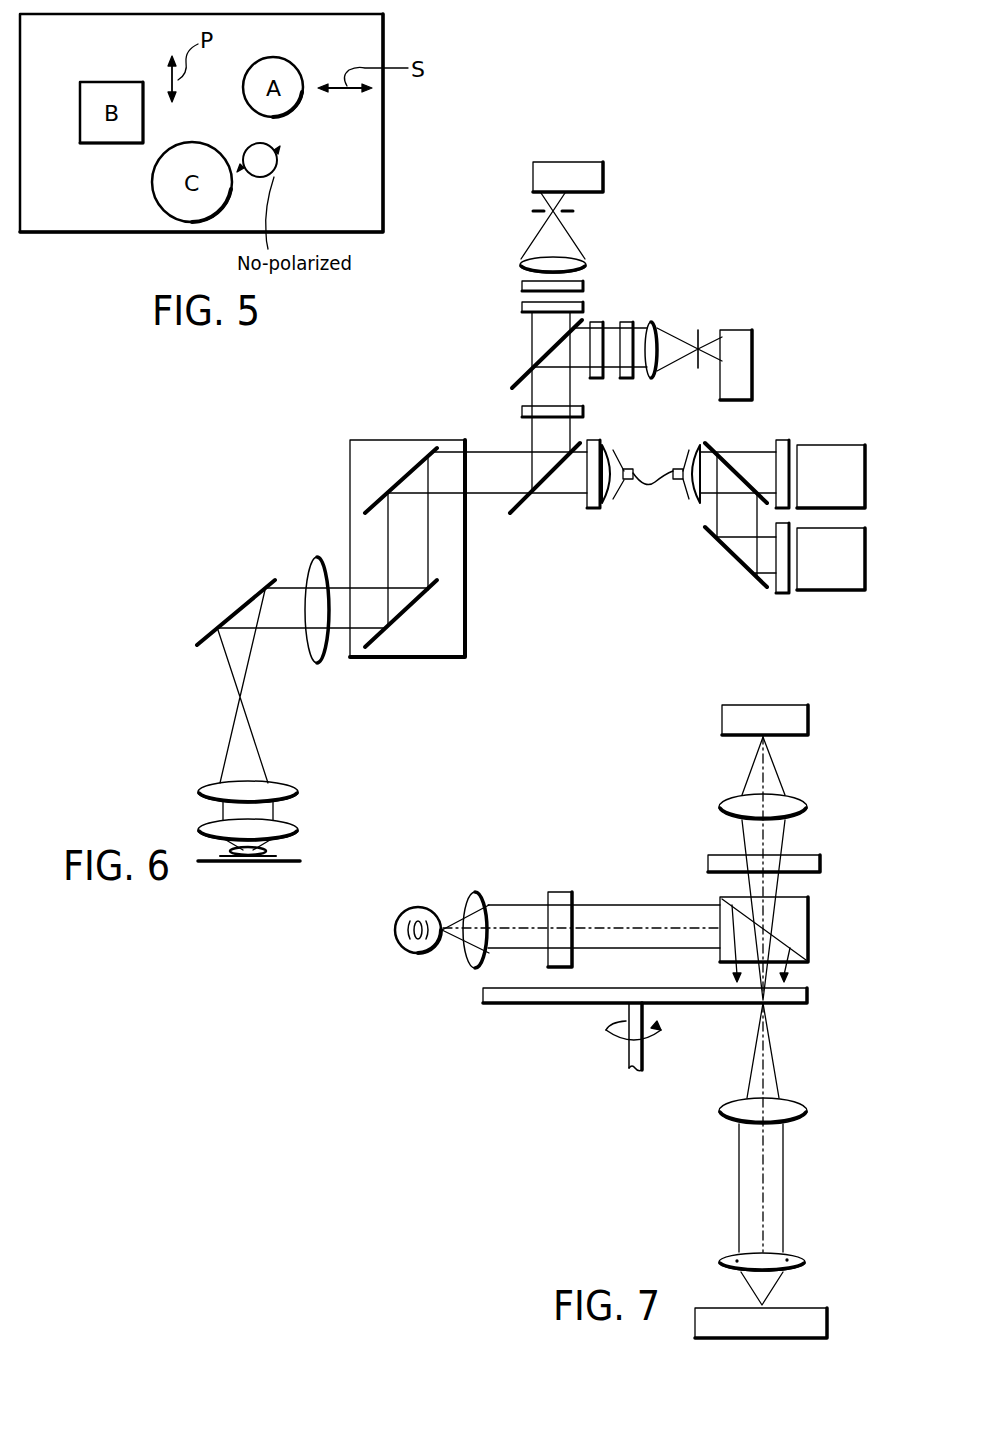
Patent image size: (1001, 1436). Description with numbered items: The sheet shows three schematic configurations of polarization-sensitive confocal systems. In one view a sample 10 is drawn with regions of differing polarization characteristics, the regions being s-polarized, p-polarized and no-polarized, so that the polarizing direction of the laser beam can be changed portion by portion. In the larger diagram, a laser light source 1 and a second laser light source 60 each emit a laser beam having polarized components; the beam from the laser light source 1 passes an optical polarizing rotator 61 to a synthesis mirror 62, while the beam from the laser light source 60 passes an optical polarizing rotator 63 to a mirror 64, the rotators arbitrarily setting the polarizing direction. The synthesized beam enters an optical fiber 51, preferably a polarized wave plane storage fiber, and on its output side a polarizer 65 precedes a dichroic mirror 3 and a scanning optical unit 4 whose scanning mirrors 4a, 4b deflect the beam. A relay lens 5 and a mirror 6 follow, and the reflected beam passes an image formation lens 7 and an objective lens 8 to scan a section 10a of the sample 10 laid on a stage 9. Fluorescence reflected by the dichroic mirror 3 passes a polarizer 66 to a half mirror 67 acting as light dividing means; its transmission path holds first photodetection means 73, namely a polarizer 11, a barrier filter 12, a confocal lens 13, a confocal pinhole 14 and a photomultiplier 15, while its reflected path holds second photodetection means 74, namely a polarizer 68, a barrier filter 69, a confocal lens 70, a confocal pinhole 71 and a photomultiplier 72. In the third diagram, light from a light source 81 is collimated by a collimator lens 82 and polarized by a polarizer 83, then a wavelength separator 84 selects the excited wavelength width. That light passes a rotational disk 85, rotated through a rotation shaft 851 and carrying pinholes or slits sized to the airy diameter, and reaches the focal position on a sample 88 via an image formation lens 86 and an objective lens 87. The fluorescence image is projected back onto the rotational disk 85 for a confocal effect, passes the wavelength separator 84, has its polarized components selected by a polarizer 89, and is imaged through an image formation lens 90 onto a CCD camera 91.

In FIG. 6, the laser light source 1 is at (848, 444).
In FIG. 6, the dichroic mirror 3 is at (527, 508).
In FIG. 6, the scanning optical unit 4 is at (426, 559).
In FIG. 6, the scanning mirror 4a is at (403, 475).
In FIG. 6, the scanning mirror 4b is at (414, 600).
In FIG. 6, the relay lens 5 is at (318, 555).
In FIG. 6, the mirror 6 is at (222, 613).
In FIG. 6, the image formation lens 7 is at (298, 791).
In FIG. 6, the objective lens 8 is at (298, 830).
In FIG. 6, the stage 9 is at (289, 863).
In FIG. 5, the sample 10 is at (383, 175).
In FIG. 6, the sample 10 is at (268, 848).
In FIG. 6, the section 10a is at (233, 859).
In FIG. 6, the polarizer 11 is at (520, 308).
In FIG. 6, the barrier filter 12 is at (520, 287).
In FIG. 6, the confocal lens 13 is at (520, 266).
In FIG. 6, the confocal pinhole 14 is at (571, 213).
In FIG. 6, the photomultiplier 15 is at (603, 173).
In FIG. 6, the optical fiber 51 is at (655, 485).
In FIG. 6, the laser light source 60 is at (832, 592).
In FIG. 6, the optical polarizing rotator 61 is at (781, 439).
In FIG. 6, the synthesis mirror 62 is at (740, 469).
In FIG. 6, the optical polarizing rotator 63 is at (783, 595).
In FIG. 6, the mirror 64 is at (735, 562).
In FIG. 6, the polarizer 65 is at (593, 510).
In FIG. 6, the polarizer 66 is at (520, 412).
In FIG. 6, the half mirror 67 is at (524, 378).
In FIG. 6, the polarizer 68 is at (597, 320).
In FIG. 6, the barrier filter 69 is at (626, 380).
In FIG. 6, the confocal lens 70 is at (654, 379).
In FIG. 6, the confocal pinhole 71 is at (701, 330).
In FIG. 6, the photomultiplier 72 is at (753, 349).
In FIG. 6, the first photodetection means 73 is at (491, 228).
In FIG. 6, the second photodetection means 74 is at (673, 288).
In FIG. 7, the light source 81 is at (414, 906).
In FIG. 7, the collimator lens 82 is at (476, 890).
In FIG. 7, the polarizer 83 is at (560, 892).
In FIG. 7, the wavelength separator 84 is at (808, 932).
In FIG. 7, the rotational disk 85 is at (483, 991).
In FIG. 7, the rotation shaft 851 is at (627, 1054).
In FIG. 7, the image formation lens 86 is at (808, 1110).
In FIG. 7, the objective lens 87 is at (806, 1262).
In FIG. 7, the sample 88 is at (828, 1322).
In FIG. 7, the polarizer 89 is at (821, 863).
In FIG. 7, the image formation lens 90 is at (720, 808).
In FIG. 7, the CCD camera 91 is at (720, 720).